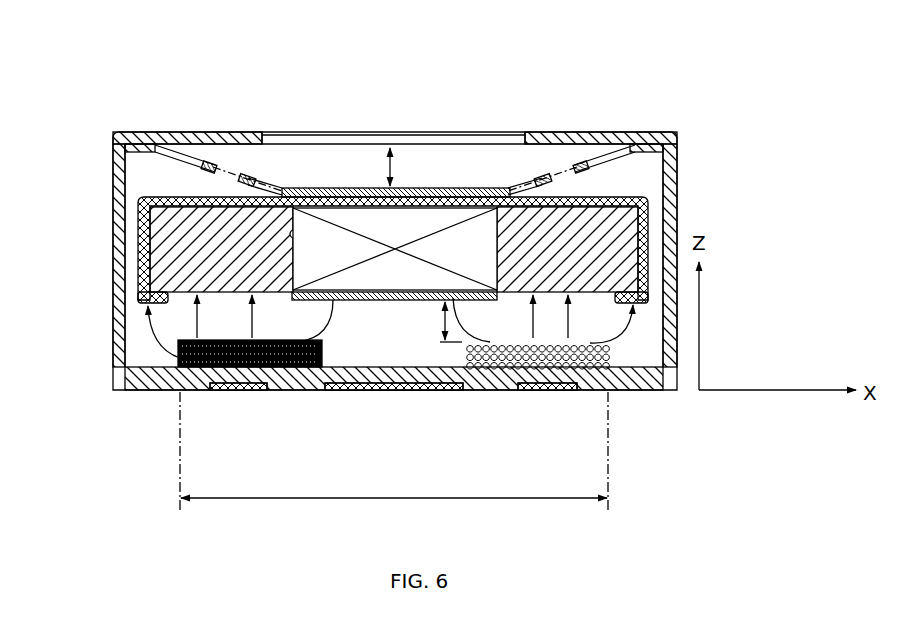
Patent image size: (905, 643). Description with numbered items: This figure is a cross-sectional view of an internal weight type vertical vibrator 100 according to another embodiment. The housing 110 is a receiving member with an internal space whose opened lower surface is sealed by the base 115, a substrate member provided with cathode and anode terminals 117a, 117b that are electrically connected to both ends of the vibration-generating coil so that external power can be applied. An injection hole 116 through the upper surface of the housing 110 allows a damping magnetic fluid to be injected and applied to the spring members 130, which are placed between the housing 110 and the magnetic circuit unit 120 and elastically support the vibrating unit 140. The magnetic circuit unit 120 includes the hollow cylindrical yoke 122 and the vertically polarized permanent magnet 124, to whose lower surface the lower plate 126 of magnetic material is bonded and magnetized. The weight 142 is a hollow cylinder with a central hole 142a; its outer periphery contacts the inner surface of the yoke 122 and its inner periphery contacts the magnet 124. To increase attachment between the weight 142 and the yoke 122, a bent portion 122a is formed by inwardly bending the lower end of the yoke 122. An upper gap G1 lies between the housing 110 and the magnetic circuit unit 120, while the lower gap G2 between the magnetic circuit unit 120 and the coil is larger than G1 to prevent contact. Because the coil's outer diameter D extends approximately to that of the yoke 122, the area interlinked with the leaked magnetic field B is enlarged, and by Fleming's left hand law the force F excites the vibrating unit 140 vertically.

The internal weight type vertical vibrator 100 is at (644, 122).
The housing 110 is at (150, 132).
The base 115 is at (657, 392).
The injection hole 116 is at (517, 133).
The cathode terminal 117a is at (445, 392).
The anode terminal 117b is at (555, 392).
The magnetic circuit unit 120 is at (381, 232).
The yoke 122 is at (456, 200).
The bent portion 122a is at (162, 303).
The magnet 124 is at (352, 220).
The lower plate 126 is at (377, 300).
The spring members 130 is at (216, 160).
The vibrating unit 140 is at (133, 297).
The weight 142 is at (157, 253).
The central hole 142a is at (290, 234).
The upper gap G1 is at (392, 152).
The lower gap G2 is at (435, 322).
The force F is at (382, 316).
The magnetic field B is at (386, 328).
The outer diameter D is at (394, 451).